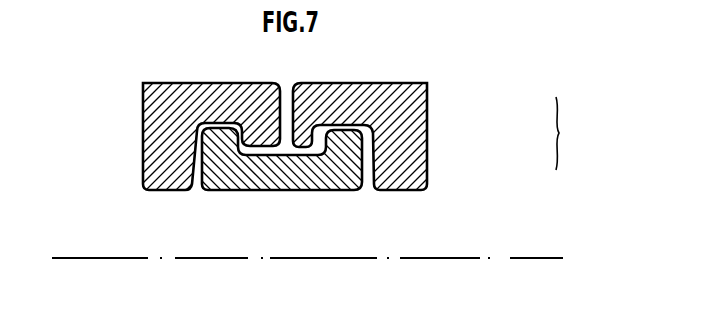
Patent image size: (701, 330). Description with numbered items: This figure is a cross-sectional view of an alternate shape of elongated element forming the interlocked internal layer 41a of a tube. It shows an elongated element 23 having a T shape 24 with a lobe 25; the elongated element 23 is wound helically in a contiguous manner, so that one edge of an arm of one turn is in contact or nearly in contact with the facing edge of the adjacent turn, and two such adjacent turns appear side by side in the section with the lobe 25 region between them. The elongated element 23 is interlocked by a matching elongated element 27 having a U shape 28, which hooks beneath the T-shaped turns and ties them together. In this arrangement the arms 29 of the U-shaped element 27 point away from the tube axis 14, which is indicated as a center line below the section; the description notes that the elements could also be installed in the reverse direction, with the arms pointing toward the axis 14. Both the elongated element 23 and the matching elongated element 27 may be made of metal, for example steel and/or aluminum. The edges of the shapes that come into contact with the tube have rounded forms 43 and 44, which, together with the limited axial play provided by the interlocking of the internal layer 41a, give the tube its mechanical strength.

The elongated element 23 is at (152, 73).
The T shape 24 is at (413, 143).
The lobe 25 is at (258, 124).
The matching elongated element 27 is at (204, 198).
The U shape 28 is at (278, 183).
The arms 29 is at (224, 144).
The rounded form 43 is at (355, 200).
The rounded form 44 is at (391, 200).
The internal layer 41a is at (578, 133).
The axis 14 is at (528, 257).